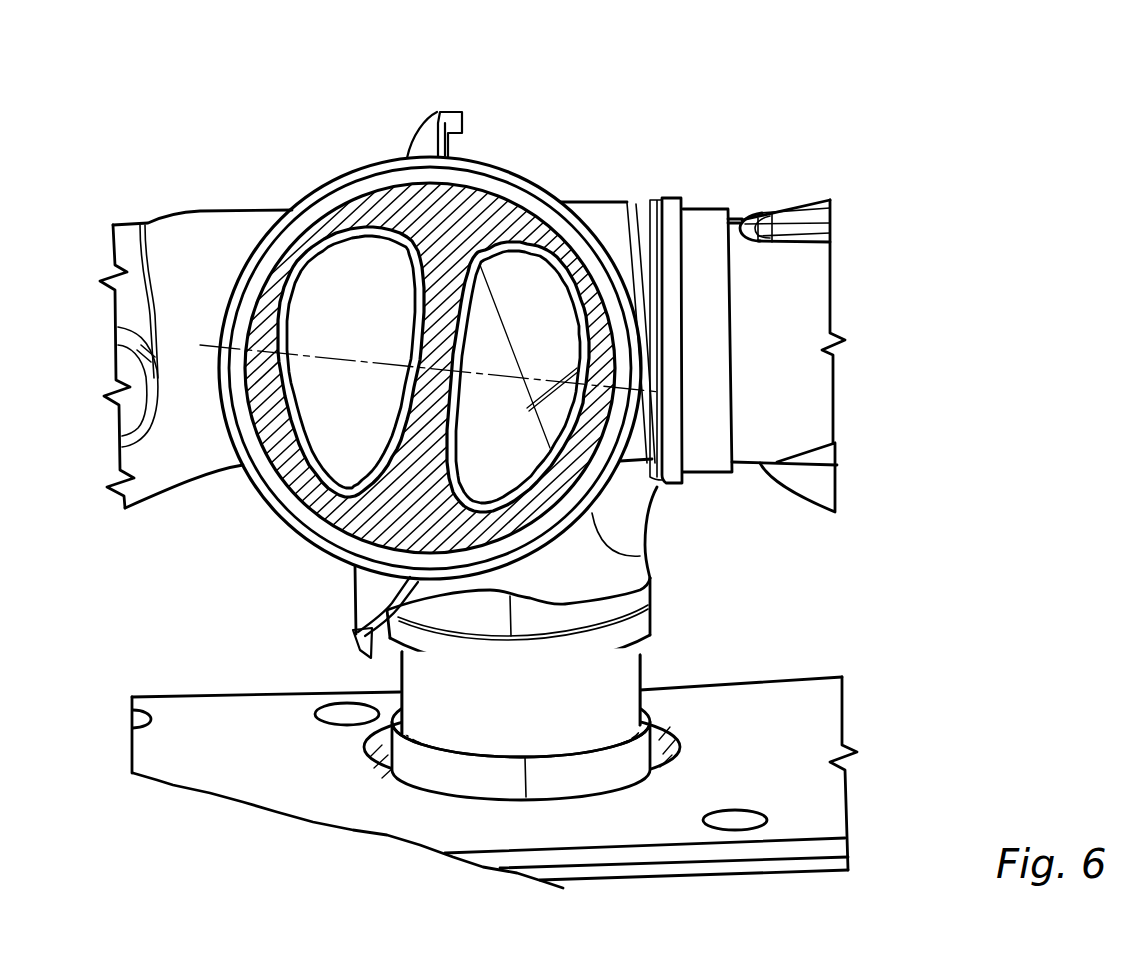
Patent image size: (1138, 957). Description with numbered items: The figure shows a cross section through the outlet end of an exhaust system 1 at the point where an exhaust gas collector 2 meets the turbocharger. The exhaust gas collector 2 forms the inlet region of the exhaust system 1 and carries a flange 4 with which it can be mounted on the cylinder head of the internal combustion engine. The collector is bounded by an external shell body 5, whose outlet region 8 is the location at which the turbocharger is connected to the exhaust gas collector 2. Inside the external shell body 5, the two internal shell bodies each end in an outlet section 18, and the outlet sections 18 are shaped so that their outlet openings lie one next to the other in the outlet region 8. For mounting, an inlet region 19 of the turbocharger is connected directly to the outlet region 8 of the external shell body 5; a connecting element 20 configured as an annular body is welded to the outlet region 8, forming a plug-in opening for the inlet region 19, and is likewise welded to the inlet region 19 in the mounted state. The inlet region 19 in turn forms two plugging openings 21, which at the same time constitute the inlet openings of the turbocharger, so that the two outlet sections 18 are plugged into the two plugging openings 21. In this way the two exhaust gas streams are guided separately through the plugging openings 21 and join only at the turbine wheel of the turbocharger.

The exhaust system 1 is at (772, 138).
The exhaust gas collector 2 is at (908, 432).
The flange 4 is at (762, 690).
The external shell body 5 is at (612, 202).
The outlet region 8 is at (510, 178).
The outlet section 18 is at (287, 393).
The inlet region 19 is at (440, 232).
The connecting element 20 is at (351, 190).
The plugging opening 21 is at (303, 282).